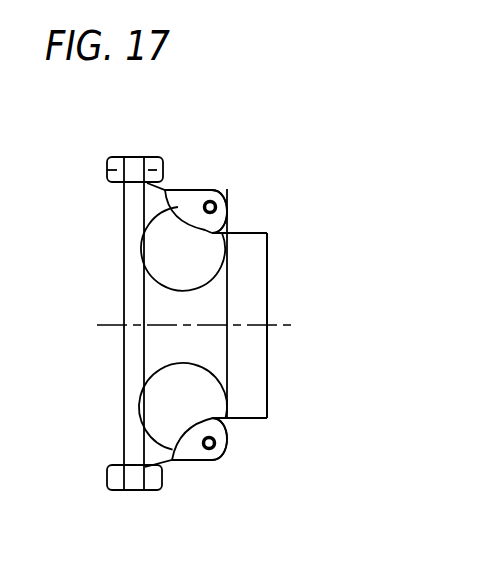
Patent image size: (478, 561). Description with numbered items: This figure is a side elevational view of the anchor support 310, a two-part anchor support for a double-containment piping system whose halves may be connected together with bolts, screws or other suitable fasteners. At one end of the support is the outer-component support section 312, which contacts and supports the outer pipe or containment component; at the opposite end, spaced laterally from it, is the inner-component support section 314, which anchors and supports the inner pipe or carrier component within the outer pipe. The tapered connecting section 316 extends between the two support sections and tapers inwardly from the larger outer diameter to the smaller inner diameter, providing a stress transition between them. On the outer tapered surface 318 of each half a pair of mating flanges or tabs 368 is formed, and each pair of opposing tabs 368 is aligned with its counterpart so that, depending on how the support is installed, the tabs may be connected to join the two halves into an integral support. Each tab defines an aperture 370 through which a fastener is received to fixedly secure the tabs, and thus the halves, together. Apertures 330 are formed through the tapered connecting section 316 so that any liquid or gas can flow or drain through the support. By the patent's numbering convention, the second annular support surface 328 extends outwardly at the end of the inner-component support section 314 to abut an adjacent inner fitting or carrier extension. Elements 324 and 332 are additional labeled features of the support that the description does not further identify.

The anchor support 310 is at (292, 177).
The outer-component support section 312 is at (137, 156).
The inner-component support section 314 is at (264, 229).
The tapered connecting section 316 is at (178, 181).
The outer tapered surface 318 is at (167, 460).
The shaft 324 is at (123, 362).
The second annular support surface 328 is at (267, 297).
The apertures 330 is at (168, 277).
The nuts 332 is at (148, 170).
The mating flanges or tabs 368 is at (220, 190).
The aperture 370 is at (218, 207).